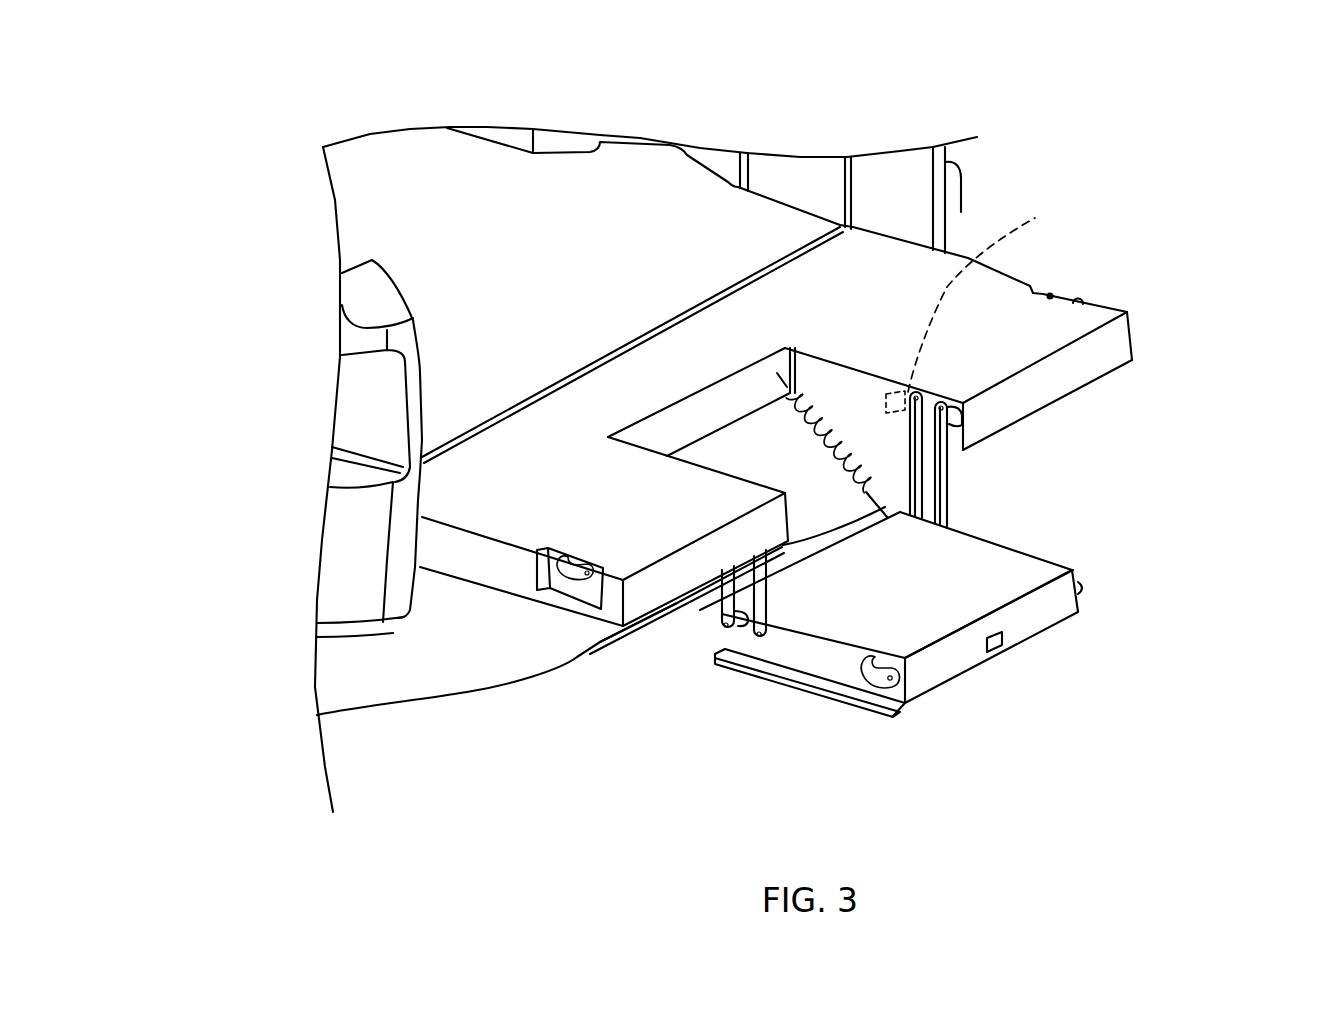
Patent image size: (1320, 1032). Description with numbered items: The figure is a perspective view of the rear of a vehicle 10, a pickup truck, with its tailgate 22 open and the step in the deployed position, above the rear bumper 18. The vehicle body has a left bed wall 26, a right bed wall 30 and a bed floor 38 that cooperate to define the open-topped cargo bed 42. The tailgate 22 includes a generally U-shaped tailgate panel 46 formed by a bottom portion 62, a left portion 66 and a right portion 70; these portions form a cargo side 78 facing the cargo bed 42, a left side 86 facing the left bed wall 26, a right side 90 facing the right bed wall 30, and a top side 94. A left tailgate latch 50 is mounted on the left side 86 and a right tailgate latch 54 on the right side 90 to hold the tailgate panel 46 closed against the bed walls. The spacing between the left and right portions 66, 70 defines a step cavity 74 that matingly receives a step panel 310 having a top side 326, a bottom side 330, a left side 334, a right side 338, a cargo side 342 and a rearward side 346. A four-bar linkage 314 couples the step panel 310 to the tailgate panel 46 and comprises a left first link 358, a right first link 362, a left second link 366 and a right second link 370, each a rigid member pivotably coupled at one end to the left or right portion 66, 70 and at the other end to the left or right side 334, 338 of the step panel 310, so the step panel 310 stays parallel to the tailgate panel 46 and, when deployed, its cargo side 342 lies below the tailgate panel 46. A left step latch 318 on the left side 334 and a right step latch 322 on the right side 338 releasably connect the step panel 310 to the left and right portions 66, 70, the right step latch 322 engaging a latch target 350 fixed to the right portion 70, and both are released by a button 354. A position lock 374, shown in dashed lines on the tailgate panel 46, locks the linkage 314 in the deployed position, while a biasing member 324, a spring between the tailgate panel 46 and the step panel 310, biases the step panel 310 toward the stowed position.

The vehicle 10 is at (548, 92).
The rear bumper 18 is at (395, 683).
The tailgate 22 is at (1134, 347).
The left bed wall 26 is at (383, 300).
The right bed wall 30 is at (807, 168).
The bed floor 38 is at (443, 262).
The cargo bed 42 is at (458, 165).
The tailgate panel 46 is at (458, 490).
The left tailgate latch 50 is at (577, 580).
The right tailgate latch 54 is at (1080, 302).
The bottom portion 62 is at (722, 330).
The left portion 66 is at (540, 533).
The right portion 70 is at (1045, 347).
The step cavity 74 is at (697, 407).
The cargo side 78 is at (990, 320).
The left side 86 is at (460, 545).
The right side 90 is at (968, 258).
The top side 94 is at (1105, 357).
The step panel 310 is at (1048, 620).
The linkage 314 is at (948, 491).
The left step latch 318 is at (878, 690).
The right step latch 322 is at (1083, 588).
The biasing member 324 is at (806, 415).
The top side 326 is at (930, 678).
The bottom side 330 is at (742, 620).
The left side 334 is at (823, 658).
The right side 338 is at (1050, 558).
The cargo side 342 is at (955, 551).
The rearward side 346 is at (985, 668).
The latch target 350 is at (965, 412).
The button 354 is at (997, 643).
The left first link 358 is at (700, 592).
The right first link 362 is at (917, 463).
The left second link 366 is at (752, 632).
The right second link 370 is at (943, 470).
The position lock 374 is at (982, 306).